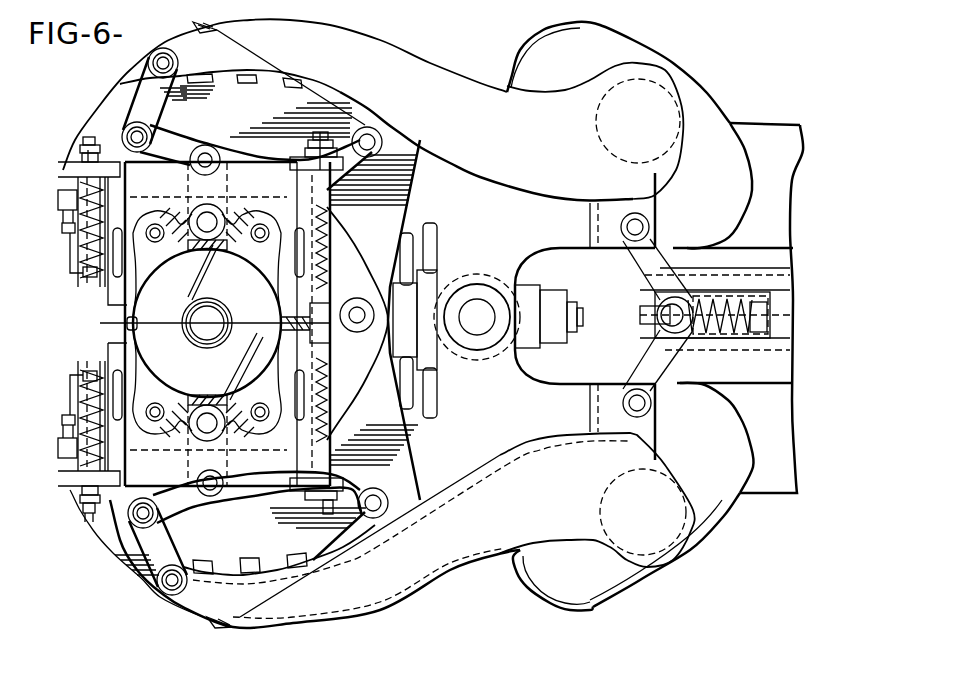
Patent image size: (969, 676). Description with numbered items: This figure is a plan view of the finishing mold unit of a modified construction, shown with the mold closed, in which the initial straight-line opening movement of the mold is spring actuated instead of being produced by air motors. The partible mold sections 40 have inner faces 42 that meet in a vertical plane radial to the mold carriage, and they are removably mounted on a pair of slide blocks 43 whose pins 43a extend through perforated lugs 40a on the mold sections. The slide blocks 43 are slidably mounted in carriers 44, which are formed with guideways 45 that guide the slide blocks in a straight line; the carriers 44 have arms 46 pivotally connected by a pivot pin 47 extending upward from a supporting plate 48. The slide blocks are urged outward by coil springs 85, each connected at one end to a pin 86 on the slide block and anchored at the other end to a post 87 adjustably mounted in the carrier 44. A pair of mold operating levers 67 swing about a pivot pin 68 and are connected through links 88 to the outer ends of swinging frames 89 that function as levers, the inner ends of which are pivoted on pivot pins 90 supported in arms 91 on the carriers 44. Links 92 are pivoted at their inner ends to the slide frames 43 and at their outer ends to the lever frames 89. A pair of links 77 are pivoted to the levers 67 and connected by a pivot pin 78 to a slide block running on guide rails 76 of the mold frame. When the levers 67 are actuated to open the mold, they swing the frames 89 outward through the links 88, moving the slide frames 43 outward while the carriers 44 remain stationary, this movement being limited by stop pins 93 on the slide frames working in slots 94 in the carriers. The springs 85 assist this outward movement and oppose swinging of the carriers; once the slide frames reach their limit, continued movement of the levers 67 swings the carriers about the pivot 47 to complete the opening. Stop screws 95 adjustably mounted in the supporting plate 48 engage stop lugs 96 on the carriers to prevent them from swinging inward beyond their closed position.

The partible mold sections 40 is at (257, 296).
The perforated lugs 40a is at (252, 226).
The inner faces 42 is at (186, 322).
The slide blocks 43 is at (257, 452).
The pins 43a is at (160, 226).
The carriers 44 is at (117, 540).
The guideways 45 is at (323, 348).
The arms 46 is at (352, 246).
The pivot pin 47 is at (360, 313).
The supporting plate 48 is at (403, 198).
The mold operating levers 67 is at (443, 74).
The pivot pin 68 is at (483, 332).
The guide rails 76 is at (756, 355).
The links 77 is at (647, 260).
The pivot pin 78 is at (652, 316).
The coil springs 85 is at (92, 244).
The pin 86 is at (83, 275).
The post 87 is at (82, 162).
The links 88 is at (143, 97).
The swinging frames 89 is at (170, 137).
The pivot pins 90 is at (387, 133).
The arms 91 is at (350, 143).
The links 92 is at (223, 180).
The stop pins 93 is at (117, 270).
The slots 94 is at (120, 260).
The stop screws 95 is at (60, 220).
The stop lugs 96 is at (65, 163).